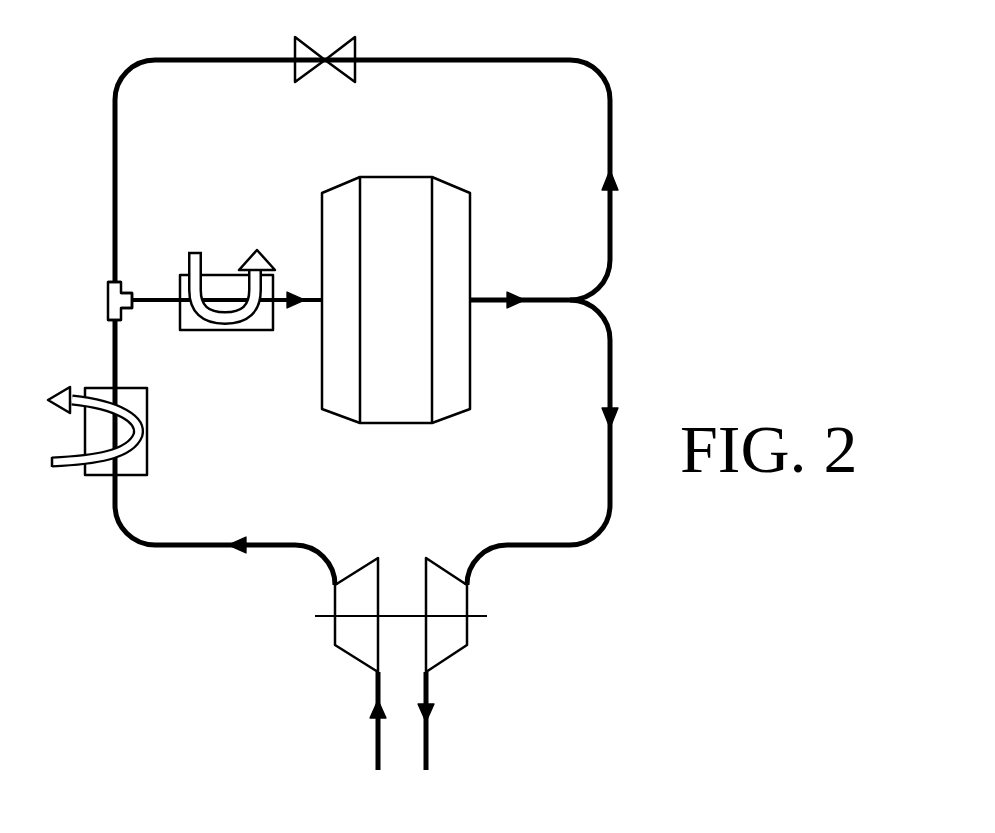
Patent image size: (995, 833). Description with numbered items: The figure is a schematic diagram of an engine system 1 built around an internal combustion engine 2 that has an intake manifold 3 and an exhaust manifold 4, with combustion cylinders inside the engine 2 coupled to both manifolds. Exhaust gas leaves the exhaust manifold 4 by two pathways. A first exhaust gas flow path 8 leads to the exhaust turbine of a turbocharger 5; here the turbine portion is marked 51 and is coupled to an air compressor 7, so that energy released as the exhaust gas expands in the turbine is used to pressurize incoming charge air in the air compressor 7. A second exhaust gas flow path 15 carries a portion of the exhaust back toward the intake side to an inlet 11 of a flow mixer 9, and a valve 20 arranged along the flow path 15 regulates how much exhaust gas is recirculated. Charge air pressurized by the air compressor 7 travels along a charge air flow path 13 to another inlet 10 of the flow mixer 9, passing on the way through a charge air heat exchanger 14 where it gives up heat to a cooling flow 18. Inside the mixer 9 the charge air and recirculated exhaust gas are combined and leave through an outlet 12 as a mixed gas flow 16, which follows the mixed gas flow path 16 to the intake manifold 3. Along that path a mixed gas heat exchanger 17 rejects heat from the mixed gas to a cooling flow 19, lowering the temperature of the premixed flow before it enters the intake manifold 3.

The engine system 1 is at (718, 138).
The internal combustion engine 2 is at (387, 440).
The intake manifold 3 is at (342, 400).
The exhaust manifold 4 is at (455, 402).
The turbocharger 5 is at (414, 664).
The turbine 51 is at (450, 605).
The air compressor 7 is at (355, 642).
The first exhaust gas flow path 8 is at (615, 493).
The flow mixer 9 is at (105, 298).
The inlet of the flow mixer 10 is at (110, 322).
The inlet of the flow mixer 11 is at (112, 285).
The outlet of the mixer 12 is at (138, 297).
The charge air flow path 13 is at (183, 552).
The charge air heat exchanger 14 is at (150, 462).
The second exhaust gas flow path 15 is at (470, 65).
The mixed gas flow path 16 is at (148, 303).
The mixed gas heat exchanger 17 is at (258, 330).
The cooling flow 18 is at (53, 465).
The cooling flow 19 is at (265, 255).
The valve 20 is at (313, 42).